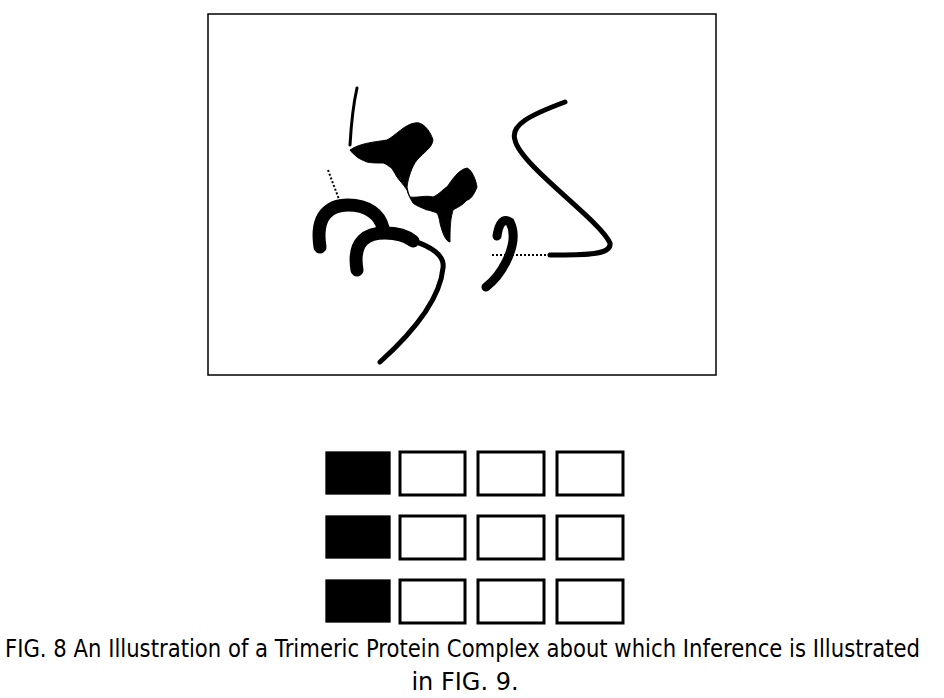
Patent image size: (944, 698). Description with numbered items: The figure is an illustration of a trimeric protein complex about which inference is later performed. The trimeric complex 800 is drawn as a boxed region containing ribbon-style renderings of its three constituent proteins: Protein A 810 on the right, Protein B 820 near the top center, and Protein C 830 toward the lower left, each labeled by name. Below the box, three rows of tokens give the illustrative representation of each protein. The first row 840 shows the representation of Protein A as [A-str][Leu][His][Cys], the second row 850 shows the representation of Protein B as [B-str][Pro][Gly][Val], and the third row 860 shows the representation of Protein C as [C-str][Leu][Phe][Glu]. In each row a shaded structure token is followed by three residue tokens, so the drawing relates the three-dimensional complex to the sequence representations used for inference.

The trimeric complex 800 is at (462, 215).
The Protein A 810 is at (596, 178).
The Protein B 820 is at (431, 165).
The Protein C 830 is at (340, 266).
The A-str sequence row 840 is at (443, 473).
The B-str sequence row 850 is at (443, 537).
The C-str sequence row 860 is at (443, 601).